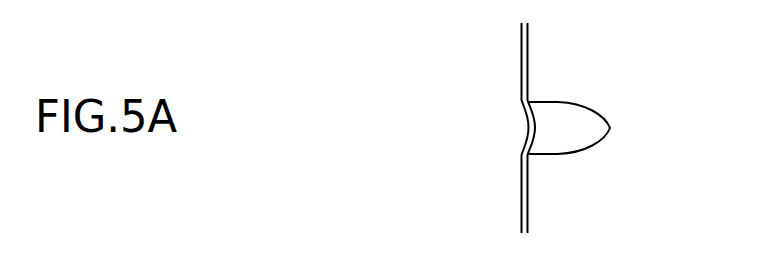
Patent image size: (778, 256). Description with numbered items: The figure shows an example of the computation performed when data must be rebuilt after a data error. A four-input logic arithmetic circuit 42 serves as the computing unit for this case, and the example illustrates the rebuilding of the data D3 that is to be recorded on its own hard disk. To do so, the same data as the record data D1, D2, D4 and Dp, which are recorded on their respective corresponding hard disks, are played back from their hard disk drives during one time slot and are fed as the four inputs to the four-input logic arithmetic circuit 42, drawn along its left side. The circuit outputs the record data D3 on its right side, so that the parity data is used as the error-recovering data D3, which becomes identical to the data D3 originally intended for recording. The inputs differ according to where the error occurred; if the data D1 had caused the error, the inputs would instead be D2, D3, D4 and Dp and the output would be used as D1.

The four-input logic arithmetic circuit 42 is at (560, 102).
The record data D1 is at (522, 46).
The record data D2 is at (522, 89).
The data D3 is at (610, 128).
The record data D4 is at (522, 209).
The parity data Dp is at (522, 169).